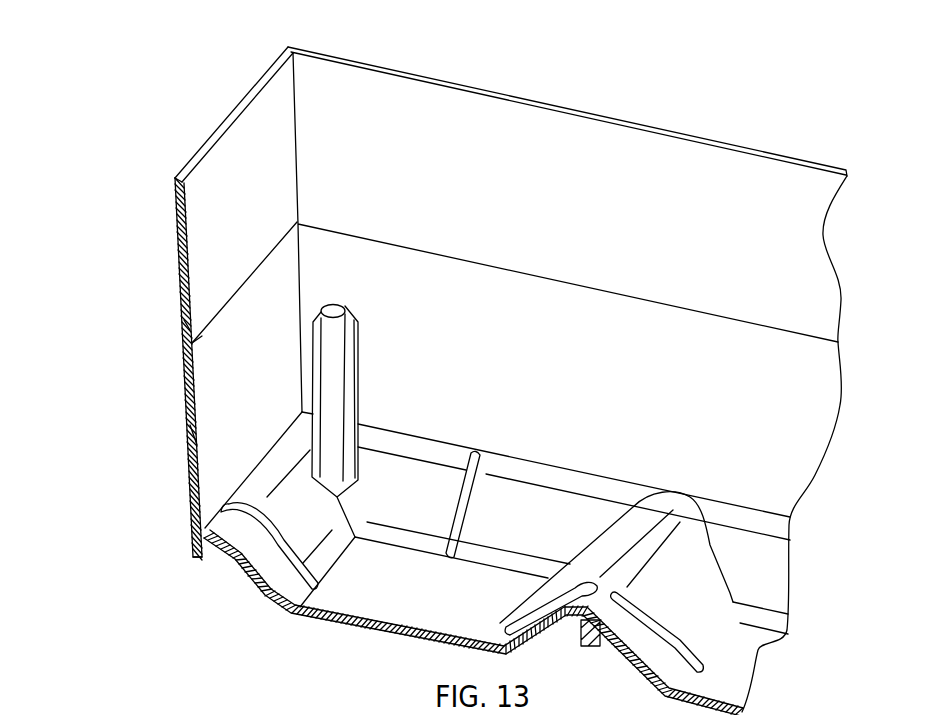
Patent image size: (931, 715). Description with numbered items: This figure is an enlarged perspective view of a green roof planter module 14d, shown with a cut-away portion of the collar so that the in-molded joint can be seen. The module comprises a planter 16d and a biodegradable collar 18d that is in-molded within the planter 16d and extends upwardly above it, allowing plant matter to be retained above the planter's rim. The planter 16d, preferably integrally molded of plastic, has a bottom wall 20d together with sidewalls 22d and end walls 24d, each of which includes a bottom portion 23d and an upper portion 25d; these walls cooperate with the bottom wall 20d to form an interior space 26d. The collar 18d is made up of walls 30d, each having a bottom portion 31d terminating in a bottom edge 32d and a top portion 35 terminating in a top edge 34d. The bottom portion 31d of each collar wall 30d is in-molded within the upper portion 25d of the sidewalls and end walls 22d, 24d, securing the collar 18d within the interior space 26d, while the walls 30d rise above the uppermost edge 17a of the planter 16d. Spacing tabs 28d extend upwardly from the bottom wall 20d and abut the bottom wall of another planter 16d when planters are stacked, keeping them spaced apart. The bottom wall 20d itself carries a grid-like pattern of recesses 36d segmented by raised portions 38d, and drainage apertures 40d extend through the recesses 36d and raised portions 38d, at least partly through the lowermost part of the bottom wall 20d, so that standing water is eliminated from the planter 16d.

The planter module 14d is at (122, 128).
The top edge 34d is at (253, 82).
The walls 30d is at (237, 137).
The upper edge of end plate 35 is at (197, 193).
The biodegradable collar 18d is at (178, 248).
The interior space 26d is at (232, 412).
The side wall portion 17a is at (186, 300).
The bottom portion 31d is at (200, 308).
The upper portion 25d is at (183, 324).
The bottom edge 32d is at (242, 288).
The planter 16d is at (187, 431).
The sidewalls 22d is at (197, 468).
The bottom portion 23d is at (197, 497).
The bottom wall 20d is at (196, 517).
The spacing tabs 28d is at (340, 390).
The end walls 24d is at (508, 373).
The recesses 36d is at (473, 593).
The raised portions 38d is at (673, 510).
The drainage apertures 40d is at (468, 496).